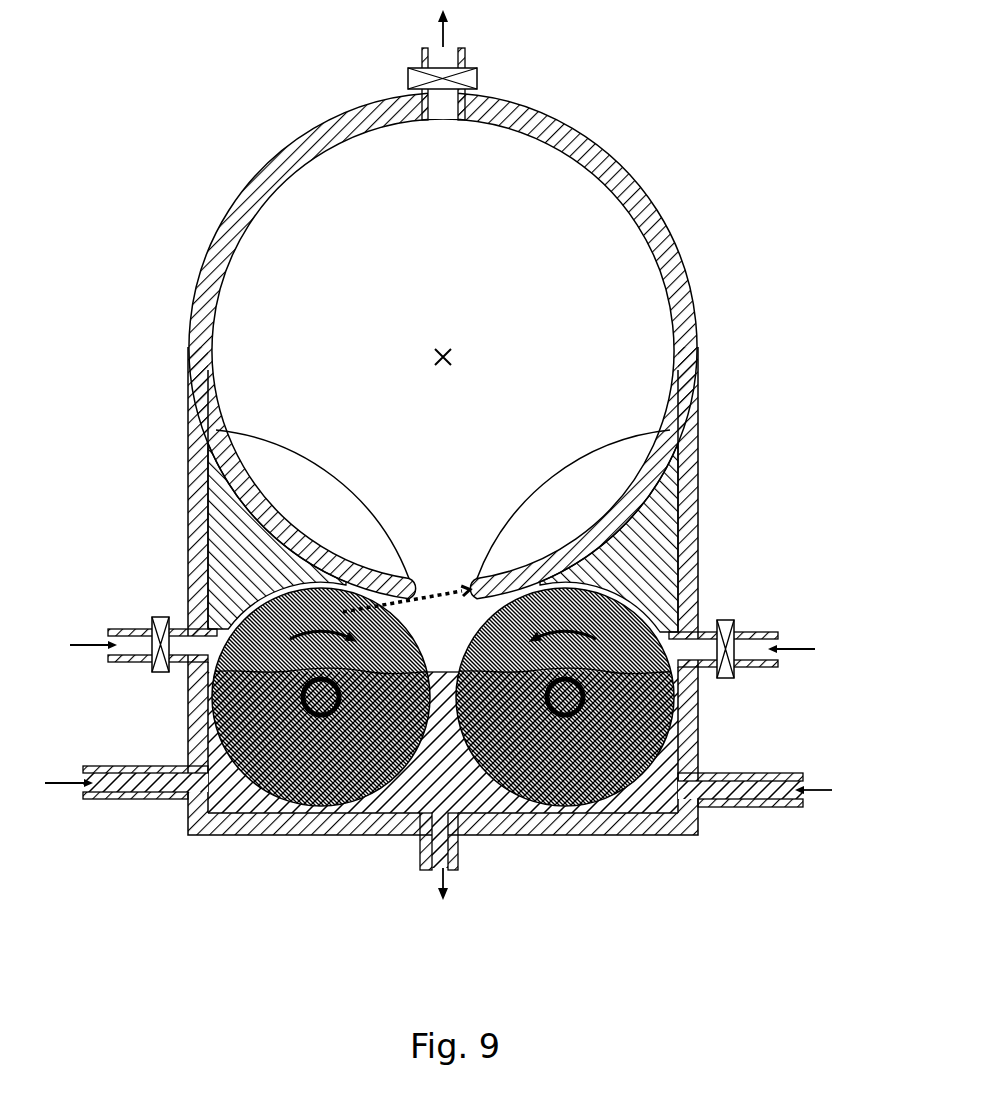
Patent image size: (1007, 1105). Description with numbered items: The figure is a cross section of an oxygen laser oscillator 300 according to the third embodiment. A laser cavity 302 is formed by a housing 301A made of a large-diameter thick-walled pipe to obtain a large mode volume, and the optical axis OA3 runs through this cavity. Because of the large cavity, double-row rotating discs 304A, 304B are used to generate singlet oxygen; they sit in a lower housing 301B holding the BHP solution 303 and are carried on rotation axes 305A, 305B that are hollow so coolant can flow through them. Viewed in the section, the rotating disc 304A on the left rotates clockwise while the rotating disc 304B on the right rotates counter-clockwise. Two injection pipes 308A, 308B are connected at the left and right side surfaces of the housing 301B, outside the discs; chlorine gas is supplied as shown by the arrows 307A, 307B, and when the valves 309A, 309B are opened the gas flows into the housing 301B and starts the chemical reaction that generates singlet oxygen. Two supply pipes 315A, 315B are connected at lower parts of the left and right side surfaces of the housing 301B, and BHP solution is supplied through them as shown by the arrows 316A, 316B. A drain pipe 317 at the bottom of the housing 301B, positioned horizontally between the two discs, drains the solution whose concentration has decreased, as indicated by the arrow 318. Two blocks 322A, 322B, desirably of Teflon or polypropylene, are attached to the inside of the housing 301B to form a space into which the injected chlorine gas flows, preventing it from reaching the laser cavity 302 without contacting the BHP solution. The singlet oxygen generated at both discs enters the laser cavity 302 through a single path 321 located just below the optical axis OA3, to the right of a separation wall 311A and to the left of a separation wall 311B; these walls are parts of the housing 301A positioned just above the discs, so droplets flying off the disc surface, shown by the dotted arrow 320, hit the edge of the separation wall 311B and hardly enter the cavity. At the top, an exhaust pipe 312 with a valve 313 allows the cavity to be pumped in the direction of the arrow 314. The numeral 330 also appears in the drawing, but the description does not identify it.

The oxygen laser oscillator 300 is at (232, 76).
The housing 301A is at (252, 192).
The housing 301B is at (190, 490).
The laser cavity 302 is at (577, 263).
The optical axis OA3 is at (450, 352).
The BHP solution 303 is at (222, 810).
The rotating disc 304A is at (222, 599).
The rotating disc 304B is at (665, 599).
The rotation axis 305A is at (300, 810).
The rotation axis 305B is at (570, 810).
The chlorine gas flow direction 307A is at (95, 650).
The chlorine gas flow direction 307B is at (784, 655).
The injection pipe 308A is at (125, 630).
The injection pipe 308B is at (765, 633).
The valve 309A is at (157, 675).
The valve 309B is at (724, 680).
The separation wall 311A is at (368, 568).
The separation wall 311B is at (517, 575).
The exhaust pipe 312 is at (460, 52).
The valve 313 is at (478, 78).
The pumped direction 314 is at (448, 33).
The supply pipe 315A is at (145, 800).
The supply pipe 315B is at (740, 808).
The BHP solution flow direction 316A is at (60, 790).
The BHP solution flow direction 316B is at (815, 805).
The drain pipe 317 is at (425, 855).
The BHP solution flow direction 318 is at (445, 901).
The droplet flow direction 320 is at (445, 582).
The path 321 is at (429, 570).
The block 322A is at (245, 548).
The block 322B is at (640, 563).
The liquid reservoir 330 is at (652, 854).